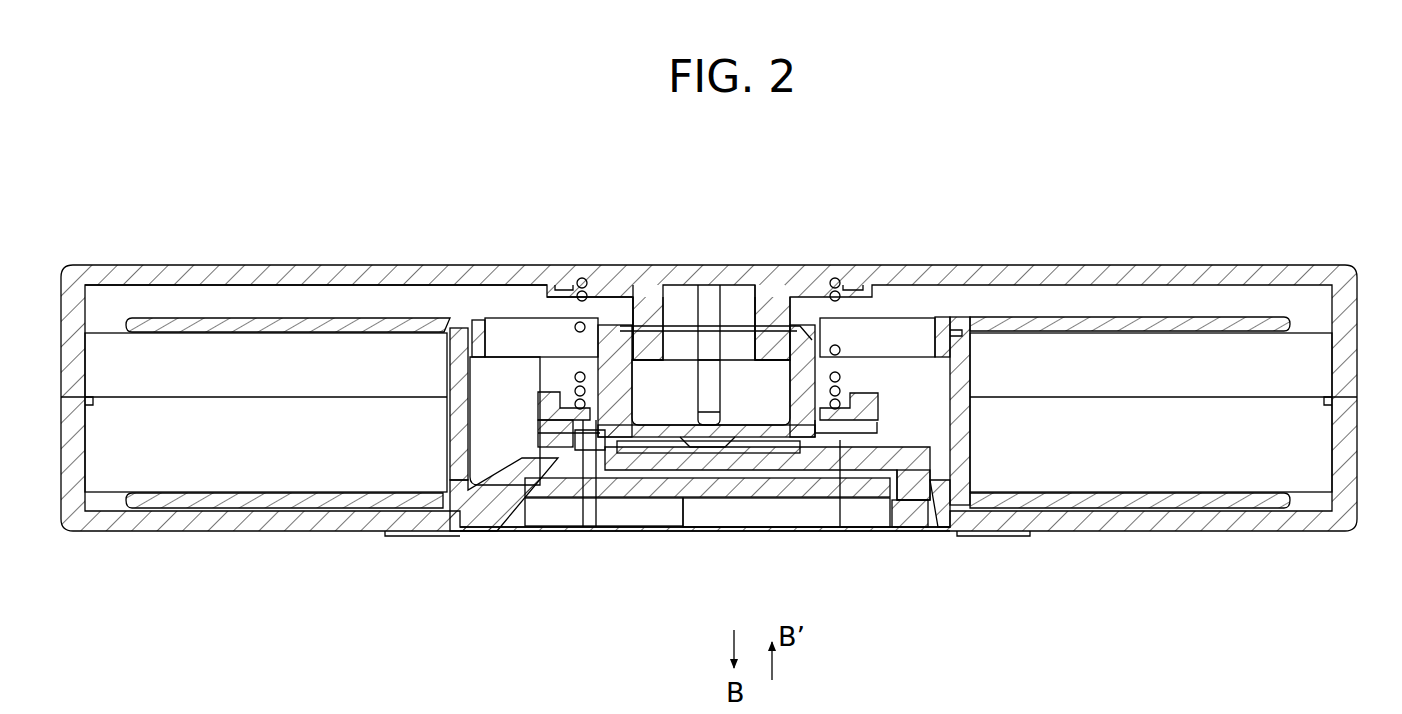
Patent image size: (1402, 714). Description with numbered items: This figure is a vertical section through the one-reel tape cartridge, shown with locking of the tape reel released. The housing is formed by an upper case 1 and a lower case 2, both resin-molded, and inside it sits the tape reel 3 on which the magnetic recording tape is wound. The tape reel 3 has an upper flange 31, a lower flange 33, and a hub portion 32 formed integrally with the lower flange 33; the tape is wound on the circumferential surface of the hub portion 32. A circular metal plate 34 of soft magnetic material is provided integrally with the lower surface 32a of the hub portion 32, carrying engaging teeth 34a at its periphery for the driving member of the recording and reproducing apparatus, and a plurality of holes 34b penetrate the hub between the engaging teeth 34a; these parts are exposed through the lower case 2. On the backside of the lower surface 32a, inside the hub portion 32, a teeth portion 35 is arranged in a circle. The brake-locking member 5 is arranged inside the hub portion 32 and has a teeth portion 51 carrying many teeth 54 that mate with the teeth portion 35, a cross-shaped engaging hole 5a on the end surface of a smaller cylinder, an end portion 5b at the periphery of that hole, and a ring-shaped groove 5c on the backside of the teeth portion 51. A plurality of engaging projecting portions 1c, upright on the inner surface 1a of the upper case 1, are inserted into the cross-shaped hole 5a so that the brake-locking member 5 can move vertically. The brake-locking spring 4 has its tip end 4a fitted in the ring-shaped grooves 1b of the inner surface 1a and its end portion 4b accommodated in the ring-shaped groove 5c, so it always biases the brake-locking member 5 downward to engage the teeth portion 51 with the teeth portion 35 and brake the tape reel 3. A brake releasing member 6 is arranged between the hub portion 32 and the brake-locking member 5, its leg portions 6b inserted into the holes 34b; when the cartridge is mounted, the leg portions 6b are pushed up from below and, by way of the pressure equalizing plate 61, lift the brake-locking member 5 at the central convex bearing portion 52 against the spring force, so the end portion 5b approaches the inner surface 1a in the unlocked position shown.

The upper case 1 is at (1355, 290).
The inner surface 1a is at (403, 296).
The ring-shaped grooves 1b is at (610, 290).
The engaging projecting portions 1c is at (765, 345).
The lower case 2 is at (1292, 536).
The tape reel 3 is at (1234, 484).
The brake-locking spring 4 is at (854, 343).
The tip end 4a is at (838, 290).
The end portion 4b is at (587, 432).
The brake-locking member 5 is at (830, 312).
The cross-shaped engaging hole 5a is at (705, 386).
The end portion 5b is at (806, 300).
The ring-shaped groove 5c is at (563, 395).
The brake releasing member 6 is at (900, 458).
The leg portions 6b is at (915, 500).
The upper flange 31 is at (1185, 324).
The hub portion 32 is at (962, 436).
The lower surface 32a is at (873, 505).
The lower flange 33 is at (1115, 500).
The metal plate 34 is at (808, 497).
The engaging teeth 34a is at (492, 536).
The holes 34b is at (952, 528).
The teeth portion 35 is at (548, 430).
The teeth portion 51 is at (886, 430).
The convex bearing portion 52 is at (668, 455).
The teeth 54 is at (850, 440).
The pressure equalizing plate 61 is at (748, 453).